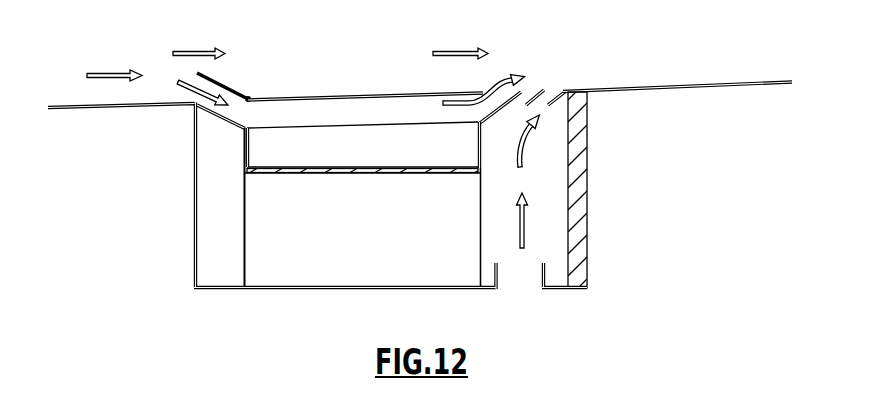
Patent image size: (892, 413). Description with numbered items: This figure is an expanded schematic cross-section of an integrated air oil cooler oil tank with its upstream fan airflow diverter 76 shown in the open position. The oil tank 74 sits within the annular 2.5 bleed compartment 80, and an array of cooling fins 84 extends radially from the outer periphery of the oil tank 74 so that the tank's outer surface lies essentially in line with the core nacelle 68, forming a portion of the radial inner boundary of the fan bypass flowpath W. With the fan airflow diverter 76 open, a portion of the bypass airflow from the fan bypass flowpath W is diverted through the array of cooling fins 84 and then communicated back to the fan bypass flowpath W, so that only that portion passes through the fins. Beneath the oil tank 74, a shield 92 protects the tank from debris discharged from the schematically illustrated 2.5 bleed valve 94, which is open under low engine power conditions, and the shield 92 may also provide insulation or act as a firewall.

The fan bypass flowpath W is at (103, 74).
The core nacelle 68 is at (743, 85).
The oil tank 74 is at (348, 156).
The fan airflow diverter 76 is at (231, 88).
The annular 2.5 bleed compartment 80 is at (334, 259).
The array of cooling fins 84 is at (360, 115).
The shield 92 is at (363, 175).
The 2.5 bleed valve 94 is at (547, 275).